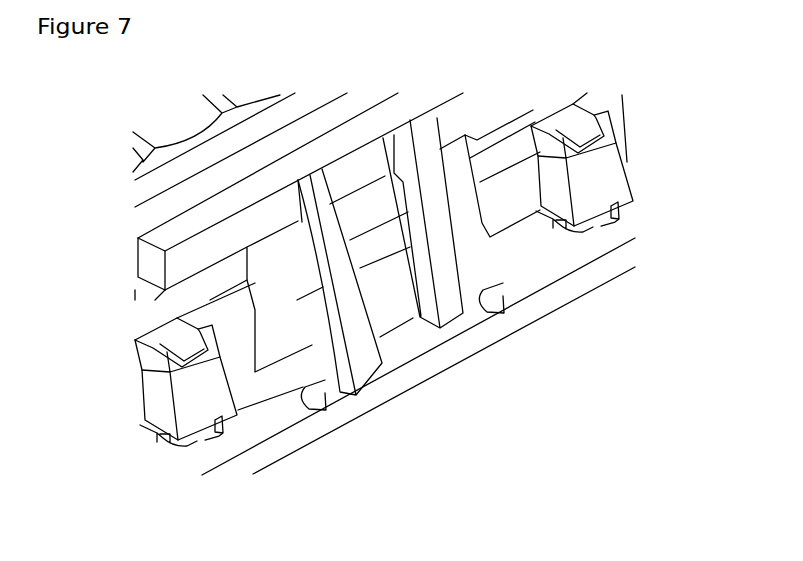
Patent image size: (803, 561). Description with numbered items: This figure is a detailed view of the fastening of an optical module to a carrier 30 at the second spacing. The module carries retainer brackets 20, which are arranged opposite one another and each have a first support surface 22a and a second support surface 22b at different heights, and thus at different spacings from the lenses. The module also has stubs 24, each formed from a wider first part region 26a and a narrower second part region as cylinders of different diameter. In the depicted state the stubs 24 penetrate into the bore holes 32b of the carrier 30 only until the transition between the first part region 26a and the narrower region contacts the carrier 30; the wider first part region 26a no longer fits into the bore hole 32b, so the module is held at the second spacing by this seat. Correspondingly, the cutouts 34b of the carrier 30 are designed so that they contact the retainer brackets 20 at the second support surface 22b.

The retainer bracket 20 is at (423, 217).
The first support surface 22a is at (398, 342).
The second support surface 22b is at (350, 397).
The stub 24 is at (135, 425).
The first part region 26a is at (197, 442).
The carrier 30 is at (550, 268).
The bore hole 32b is at (205, 447).
The cutout 34b is at (325, 393).